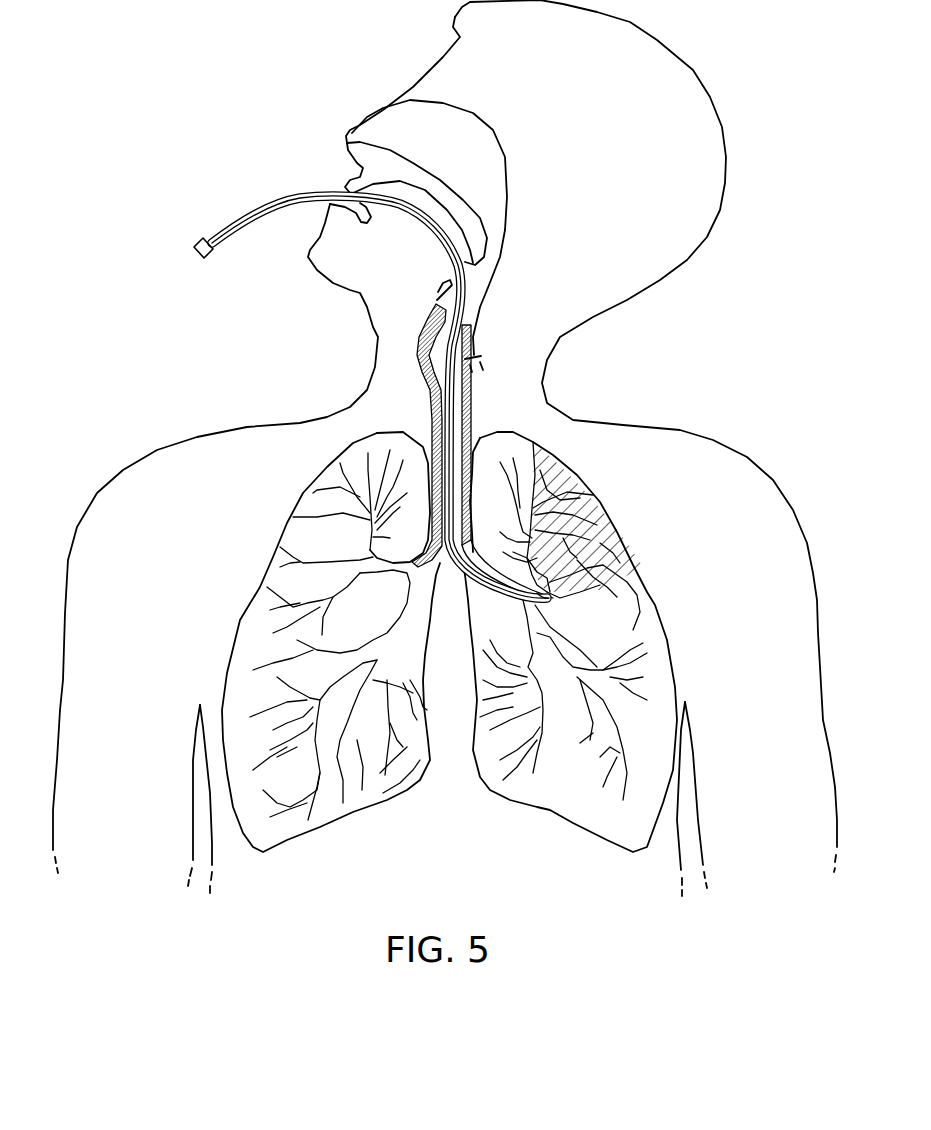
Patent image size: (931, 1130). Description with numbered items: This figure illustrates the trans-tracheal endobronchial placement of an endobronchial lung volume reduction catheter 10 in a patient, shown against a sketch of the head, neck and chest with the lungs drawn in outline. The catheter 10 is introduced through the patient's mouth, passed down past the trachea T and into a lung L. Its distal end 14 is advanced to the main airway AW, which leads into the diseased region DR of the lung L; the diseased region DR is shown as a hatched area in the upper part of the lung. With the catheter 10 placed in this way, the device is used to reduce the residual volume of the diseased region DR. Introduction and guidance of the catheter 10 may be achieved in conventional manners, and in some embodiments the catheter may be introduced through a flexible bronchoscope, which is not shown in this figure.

The endobronchial lung volume reduction catheter 10 is at (370, 372).
The trachea T is at (437, 452).
The diseased region DR is at (600, 482).
The main airway AW is at (635, 595).
The distal end 14 is at (574, 615).
The lung L is at (478, 642).